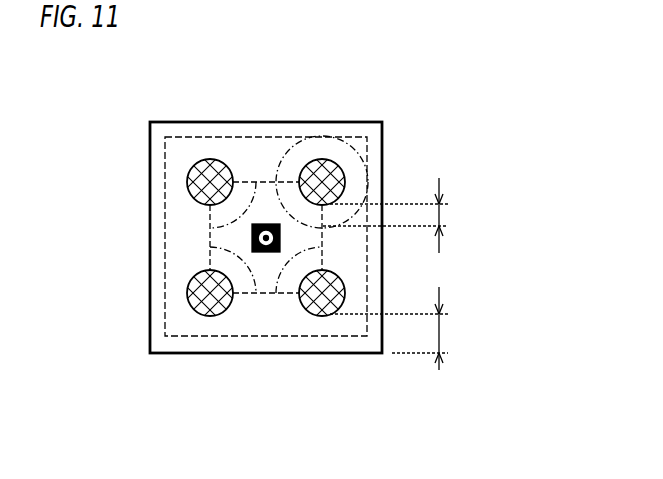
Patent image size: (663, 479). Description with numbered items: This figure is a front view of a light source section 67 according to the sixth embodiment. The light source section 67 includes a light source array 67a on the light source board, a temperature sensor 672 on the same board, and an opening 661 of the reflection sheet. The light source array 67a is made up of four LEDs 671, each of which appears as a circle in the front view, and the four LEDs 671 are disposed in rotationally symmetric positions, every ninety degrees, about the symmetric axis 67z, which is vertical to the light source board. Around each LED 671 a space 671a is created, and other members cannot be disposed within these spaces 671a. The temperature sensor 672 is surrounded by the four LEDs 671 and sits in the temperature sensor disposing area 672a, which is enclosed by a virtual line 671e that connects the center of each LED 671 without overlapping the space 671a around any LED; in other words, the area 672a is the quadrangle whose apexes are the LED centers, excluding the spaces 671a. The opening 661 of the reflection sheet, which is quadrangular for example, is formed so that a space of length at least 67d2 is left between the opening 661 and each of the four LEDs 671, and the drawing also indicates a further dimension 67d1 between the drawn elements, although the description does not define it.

The light source section 67 is at (222, 244).
The light source array 67a is at (165, 212).
The symmetric axis 67z is at (258, 239).
The LED 671 is at (323, 173).
The space 671a is at (298, 147).
The virtual line 671e is at (240, 182).
The temperature sensor 672 is at (255, 254).
The temperature sensor disposing area 672a is at (266, 254).
The opening 661 is at (348, 353).
The distance between pad and central electrode 67d1 is at (411, 215).
The space 67d2 is at (415, 328).